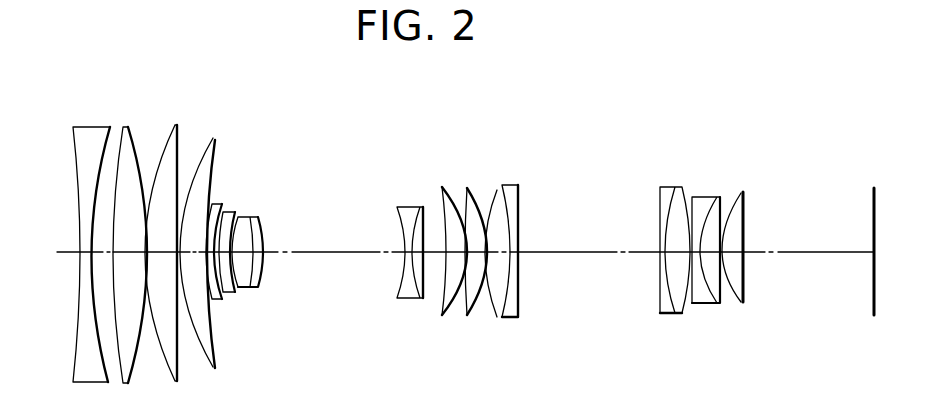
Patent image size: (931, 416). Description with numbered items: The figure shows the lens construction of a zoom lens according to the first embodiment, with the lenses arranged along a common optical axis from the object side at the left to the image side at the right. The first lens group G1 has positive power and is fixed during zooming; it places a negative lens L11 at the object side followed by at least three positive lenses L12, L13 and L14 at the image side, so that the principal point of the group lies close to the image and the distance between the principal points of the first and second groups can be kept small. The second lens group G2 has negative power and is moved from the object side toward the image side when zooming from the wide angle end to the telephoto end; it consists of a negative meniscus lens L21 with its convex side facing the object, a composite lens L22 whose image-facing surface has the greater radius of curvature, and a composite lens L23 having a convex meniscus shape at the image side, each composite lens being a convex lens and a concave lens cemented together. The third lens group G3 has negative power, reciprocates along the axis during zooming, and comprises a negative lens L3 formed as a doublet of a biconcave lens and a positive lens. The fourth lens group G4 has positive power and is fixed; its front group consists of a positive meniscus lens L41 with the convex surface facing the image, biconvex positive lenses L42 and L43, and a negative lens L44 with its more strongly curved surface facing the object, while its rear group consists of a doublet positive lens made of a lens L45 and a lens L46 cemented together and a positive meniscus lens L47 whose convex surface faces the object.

The first lens group G1 is at (248, 75).
The second lens group G2 is at (363, 144).
The third lens group G3 is at (427, 199).
The fourth lens group G4 is at (800, 141).
The negative lens L11 is at (85, 127).
The positive lens L12 is at (128, 127).
The positive lens L13 is at (173, 127).
The positive lens L14 is at (212, 140).
The negative meniscus lens L21 is at (218, 204).
The composite lens L22 is at (228, 210).
The composite lens L23 is at (248, 215).
The negative lens L3 is at (412, 190).
The positive meniscus lens L41 is at (445, 187).
The biconvex positive lens L42 is at (469, 188).
The biconvex positive lens L43 is at (497, 190).
The negative lens L44 is at (508, 186).
The lens L45 is at (685, 181).
The lens L46 is at (727, 181).
The positive meniscus lens L47 is at (741, 193).